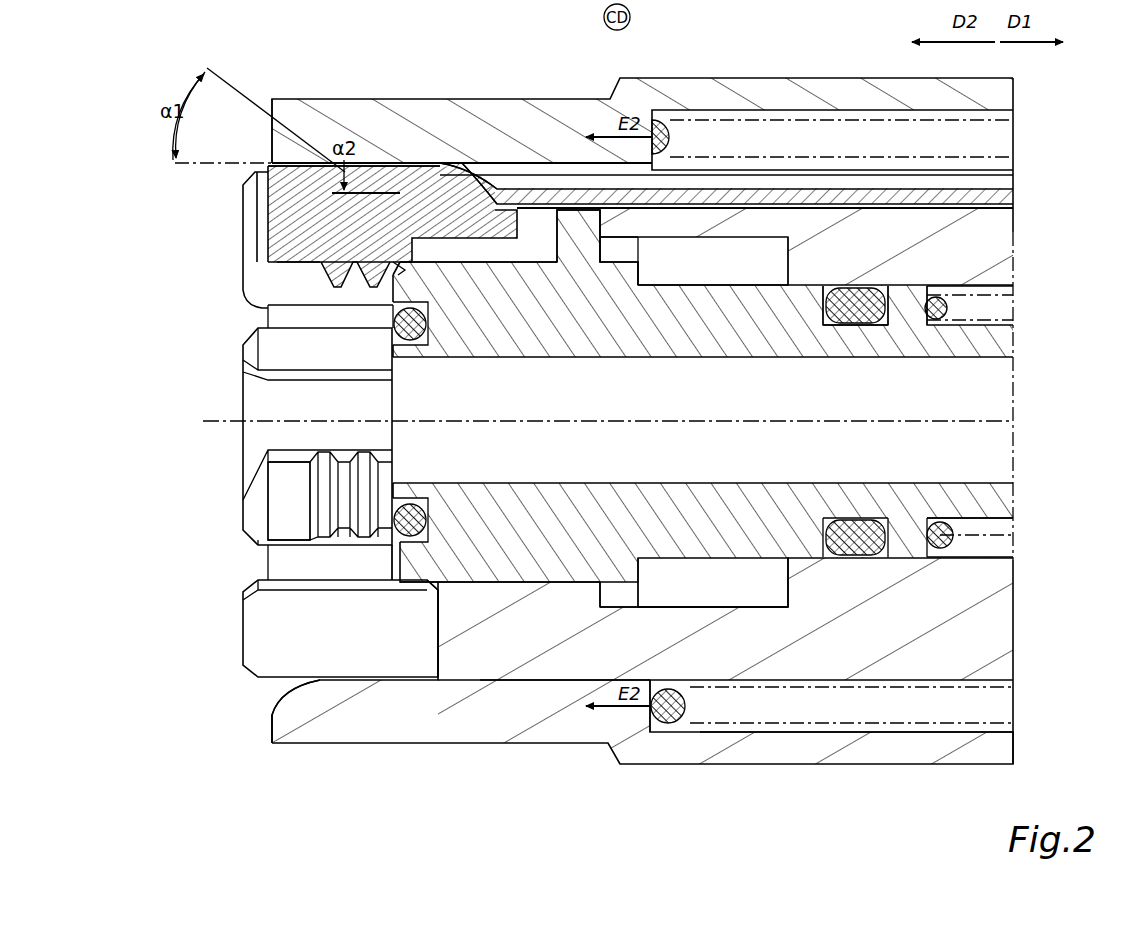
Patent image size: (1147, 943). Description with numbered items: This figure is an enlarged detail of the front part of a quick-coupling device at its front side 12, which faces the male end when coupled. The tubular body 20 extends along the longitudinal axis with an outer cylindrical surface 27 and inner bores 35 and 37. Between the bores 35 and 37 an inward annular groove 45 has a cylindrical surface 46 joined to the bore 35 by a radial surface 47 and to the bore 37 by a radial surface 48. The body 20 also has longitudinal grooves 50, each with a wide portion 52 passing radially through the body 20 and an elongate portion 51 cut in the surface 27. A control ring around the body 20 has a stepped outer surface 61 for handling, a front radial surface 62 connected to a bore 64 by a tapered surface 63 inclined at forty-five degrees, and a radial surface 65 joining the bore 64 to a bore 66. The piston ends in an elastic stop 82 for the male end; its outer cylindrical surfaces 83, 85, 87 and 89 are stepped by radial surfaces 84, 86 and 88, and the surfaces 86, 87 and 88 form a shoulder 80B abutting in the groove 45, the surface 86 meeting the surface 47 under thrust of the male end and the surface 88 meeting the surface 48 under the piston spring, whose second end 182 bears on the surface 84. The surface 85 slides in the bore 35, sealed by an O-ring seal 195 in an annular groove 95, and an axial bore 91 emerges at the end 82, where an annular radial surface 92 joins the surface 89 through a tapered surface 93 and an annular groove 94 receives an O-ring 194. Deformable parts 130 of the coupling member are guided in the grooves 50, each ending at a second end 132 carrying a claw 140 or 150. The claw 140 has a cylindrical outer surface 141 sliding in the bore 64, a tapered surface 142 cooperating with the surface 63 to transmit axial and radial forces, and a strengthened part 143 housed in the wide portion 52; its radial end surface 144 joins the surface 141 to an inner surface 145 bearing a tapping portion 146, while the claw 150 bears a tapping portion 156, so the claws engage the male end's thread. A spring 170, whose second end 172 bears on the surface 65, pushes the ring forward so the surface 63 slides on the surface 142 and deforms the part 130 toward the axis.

The second side 12 is at (190, 688).
The tubular body 20 is at (987, 630).
The outer cylindrical surface 27 is at (511, 685).
The bore 35 is at (906, 522).
The bore 37 is at (524, 572).
The annular groove 45 is at (675, 456).
The cylindrical surface 46 is at (709, 598).
The radial surface 47 is at (774, 582).
The radial surface 48 is at (696, 603).
The longitudinal grooves 50 is at (570, 386).
The elongate portion 51 is at (588, 263).
The wide portion 52 is at (492, 268).
The stepped outer surface 61 is at (943, 770).
The radial surface 62 is at (260, 731).
The tapered surface 63 is at (284, 693).
The bore 64 is at (604, 668).
The radial surface 65 is at (661, 728).
The bore 66 is at (836, 726).
The shoulder 80B is at (593, 386).
The second end 82 is at (456, 540).
The outer cylindrical surface 83 is at (996, 317).
The radial surface 84 is at (940, 318).
The outer cylindrical surface 85 is at (720, 280).
The radial surface 86 is at (649, 264).
The outer cylindrical surface 87 is at (623, 240).
The radial surface 88 is at (591, 223).
The outer cylindrical surface 89 is at (606, 587).
The bore 91 is at (834, 482).
The annular radial surface 92 is at (393, 556).
The tapered surface 93 is at (401, 584).
The annular groove 94 is at (466, 548).
The annular groove 95 is at (846, 331).
The deformable part 130 is at (747, 186).
The second end 132 is at (501, 186).
The claw 140 is at (292, 245).
The cylindrical outer surface 141 is at (331, 160).
The tapered surface 142 is at (461, 167).
The strengthened part 143 is at (427, 334).
The annular radial end surface 144 is at (258, 205).
The inner surface 145 is at (321, 280).
The tapping portion 146 is at (318, 291).
The claw 150 is at (292, 470).
The tapping portion 156 is at (333, 506).
The spring 170 is at (1000, 705).
The second end 172 is at (688, 714).
The second end 182 is at (1004, 545).
The O-ring 194 is at (417, 497).
The O-ring seal 195 is at (879, 327).